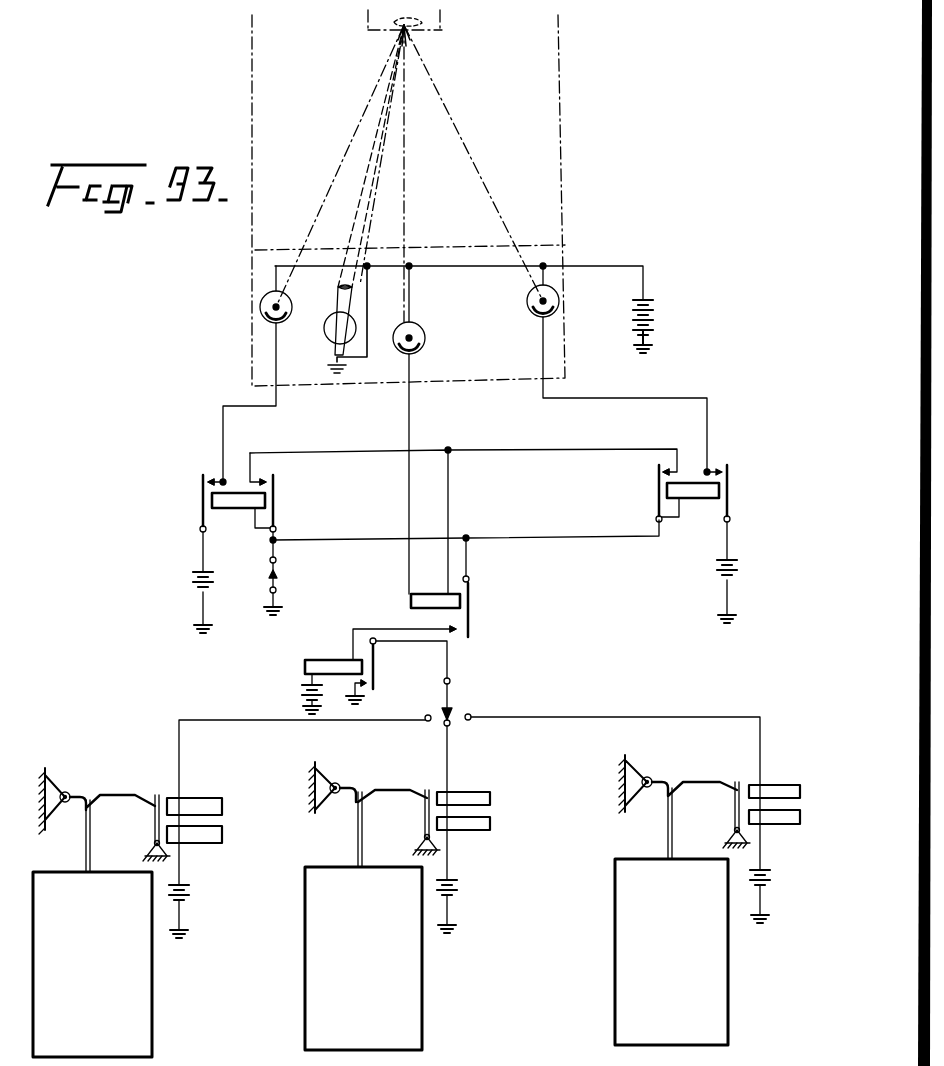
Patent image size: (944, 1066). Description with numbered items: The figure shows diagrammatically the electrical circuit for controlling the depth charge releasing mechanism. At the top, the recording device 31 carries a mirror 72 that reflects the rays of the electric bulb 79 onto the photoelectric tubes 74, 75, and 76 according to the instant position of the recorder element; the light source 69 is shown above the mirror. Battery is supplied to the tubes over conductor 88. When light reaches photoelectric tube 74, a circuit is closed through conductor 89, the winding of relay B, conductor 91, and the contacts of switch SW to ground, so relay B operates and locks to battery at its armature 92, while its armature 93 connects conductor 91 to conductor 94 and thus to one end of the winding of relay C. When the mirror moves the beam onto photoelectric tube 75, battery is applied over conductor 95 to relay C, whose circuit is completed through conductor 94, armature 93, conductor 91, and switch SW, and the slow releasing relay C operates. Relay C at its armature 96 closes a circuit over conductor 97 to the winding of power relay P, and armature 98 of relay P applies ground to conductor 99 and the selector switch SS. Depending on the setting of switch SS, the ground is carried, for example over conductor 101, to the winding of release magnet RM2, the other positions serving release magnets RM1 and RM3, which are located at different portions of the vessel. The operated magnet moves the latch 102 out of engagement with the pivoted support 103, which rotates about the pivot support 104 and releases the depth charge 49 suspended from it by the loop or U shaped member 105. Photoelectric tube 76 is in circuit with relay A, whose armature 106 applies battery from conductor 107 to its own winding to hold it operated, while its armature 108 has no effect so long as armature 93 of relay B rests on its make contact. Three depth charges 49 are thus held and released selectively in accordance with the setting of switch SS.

The recording device 31 is at (560, 127).
The light source 69 is at (445, 27).
The mirror 72 is at (396, 30).
The photoelectric tube 74 is at (557, 296).
The photoelectric tube 75 is at (421, 333).
The photoelectric tube 76 is at (261, 309).
The electric bulb 79 is at (327, 330).
The conductor 88 is at (618, 262).
The conductor 89 is at (592, 397).
The conductor 91 is at (528, 539).
The armature of relay B 92 is at (730, 466).
The armature of relay B 93 is at (655, 482).
The conductor 94 is at (450, 504).
The conductor 95 is at (410, 406).
The armature of relay C 96 is at (470, 616).
The conductor 97 is at (378, 628).
The armature of relay P 98 is at (375, 668).
The conductor 99 is at (449, 658).
The conductor 101 is at (450, 763).
The latch 102 is at (151, 796).
The pivoted support 103 is at (104, 792).
The pivot support 104 is at (67, 792).
The loop or U shaped member 105 is at (90, 842).
The armature of relay A 106 is at (200, 508).
The conductor 107 is at (203, 549).
The armature of relay A 108 is at (274, 508).
The depth charge 49 is at (380, 958).
The switch SW is at (278, 580).
The selector switch SS is at (451, 696).
The relay C is at (435, 591).
The power relay P is at (332, 675).
The release magnet RM1 is at (296, 829).
The release magnet RM2 is at (469, 800).
The release magnet RM3 is at (641, 820).